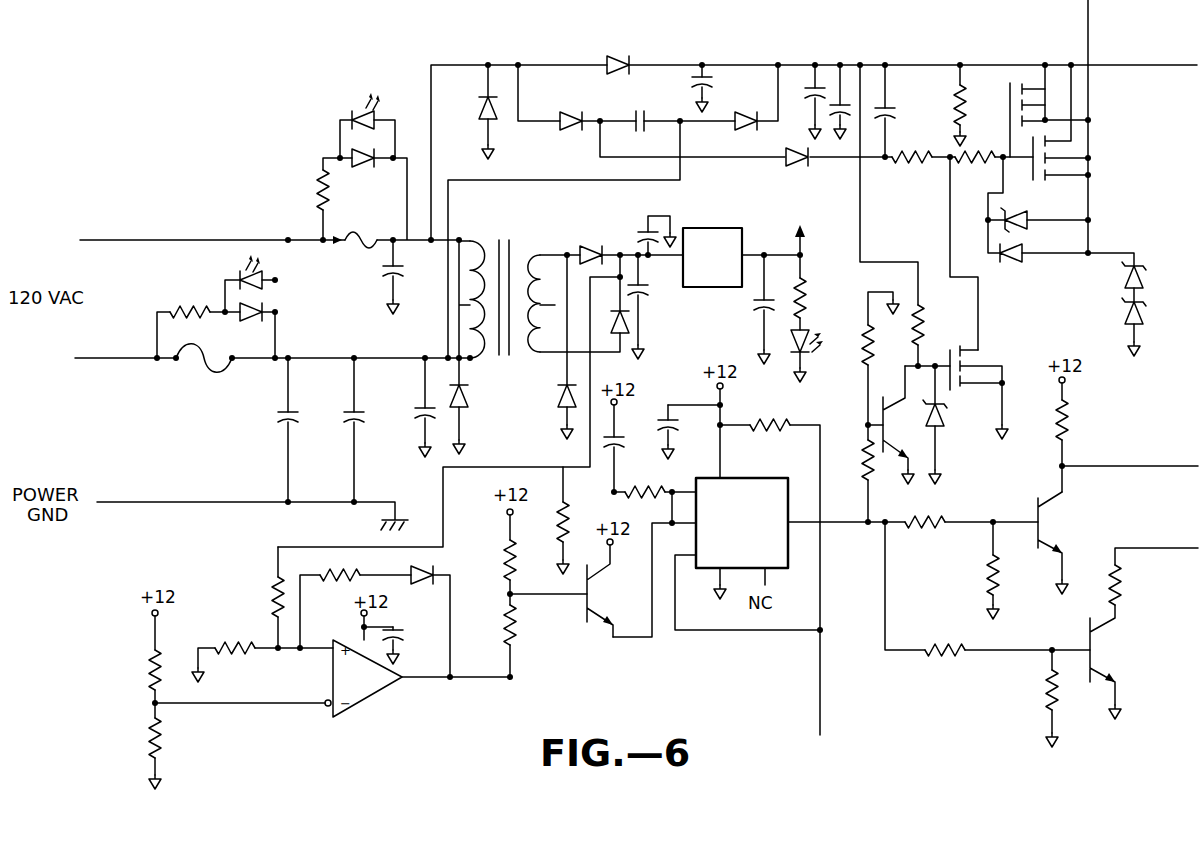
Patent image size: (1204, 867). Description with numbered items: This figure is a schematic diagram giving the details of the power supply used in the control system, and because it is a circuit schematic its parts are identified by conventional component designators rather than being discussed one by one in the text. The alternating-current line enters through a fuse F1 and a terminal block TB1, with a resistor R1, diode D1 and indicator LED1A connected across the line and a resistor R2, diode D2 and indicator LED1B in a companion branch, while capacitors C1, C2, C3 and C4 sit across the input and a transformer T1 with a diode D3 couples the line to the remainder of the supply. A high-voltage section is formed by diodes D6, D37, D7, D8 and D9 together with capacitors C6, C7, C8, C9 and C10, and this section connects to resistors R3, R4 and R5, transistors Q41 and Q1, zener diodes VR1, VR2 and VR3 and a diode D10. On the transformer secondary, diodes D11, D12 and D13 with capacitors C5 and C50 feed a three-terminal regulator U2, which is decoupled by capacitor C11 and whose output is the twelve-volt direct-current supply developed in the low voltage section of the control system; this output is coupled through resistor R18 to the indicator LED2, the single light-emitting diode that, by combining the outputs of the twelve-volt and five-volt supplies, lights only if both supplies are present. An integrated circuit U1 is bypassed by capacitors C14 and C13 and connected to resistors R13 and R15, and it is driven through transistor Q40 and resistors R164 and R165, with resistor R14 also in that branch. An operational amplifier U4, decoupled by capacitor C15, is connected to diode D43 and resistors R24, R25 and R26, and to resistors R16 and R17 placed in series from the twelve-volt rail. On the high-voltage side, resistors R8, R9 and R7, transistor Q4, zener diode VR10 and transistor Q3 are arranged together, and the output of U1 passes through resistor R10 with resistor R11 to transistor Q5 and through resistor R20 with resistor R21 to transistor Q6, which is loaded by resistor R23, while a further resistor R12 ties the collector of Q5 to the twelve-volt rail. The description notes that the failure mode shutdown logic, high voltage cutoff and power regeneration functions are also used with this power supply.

The resistor R1 10K 2W R1 is at (190, 311).
The diode D1 is at (253, 324).
The light emitting diode LED 1A LED1A is at (228, 267).
The fuse F1 15A F1 is at (204, 382).
The capacitor C1 is at (265, 430).
The capacitor C2 is at (332, 430).
The capacitor C4 is at (404, 407).
The resistor R2 10K 2W R2 is at (300, 184).
The diode D2 is at (364, 173).
The light emitting diode LED 1B LED1B is at (341, 102).
The terminal block TB1 is at (359, 229).
The capacitor C3 is at (372, 277).
The transformer T1 is at (505, 289).
The diode D3 is at (474, 406).
The diode D6 is at (471, 112).
The diode D37 is at (614, 52).
The diode D7 is at (569, 109).
The capacitor C6 4.7uF 250V C6 is at (642, 103).
The diode D8 is at (739, 133).
The diode D9 is at (792, 169).
The capacitor C7 680 200V C7 is at (722, 89).
The capacitor C8 is at (803, 102).
The capacitor C9 is at (842, 102).
The capacitor C10 4.7 C10 is at (902, 103).
The resistor R3 16K 2W R3 is at (977, 105).
The resistor R4 33K 2W R4 is at (910, 160).
The resistor R5 330 1/2W R5 is at (974, 171).
The transistor Q41 is at (1040, 120).
The transistor Q1 is at (1060, 122).
The zener diode VR1 is at (1026, 213).
The diode D10 is at (1019, 267).
The zener diode VR2 is at (1108, 279).
The zener diode VR3 is at (1108, 327).
The diode D11 is at (584, 245).
The diode D12 is at (612, 305).
The diode D13 is at (549, 347).
The capacitor C5 is at (648, 307).
The capacitor C50 0.1 C50 is at (640, 227).
The voltage regulator U2 is at (712, 257).
The capacitor C11 10uF 15V C11 is at (746, 309).
The resistor R18 1K R18 is at (819, 292).
The LED LED2 is at (821, 356).
The capacitor C14 0.1 C14 is at (628, 439).
The capacitor C13 0.1 C13 is at (687, 432).
The resistor R13 10K R13 is at (770, 424).
The resistor R15 1K R15 is at (645, 494).
The integrated circuit U1 is at (741, 529).
The transistor Q40 is at (612, 591).
The resistor R164 10K R164 is at (485, 560).
The resistor R165 10K R165 is at (534, 641).
The resistor R14 10M R14 is at (544, 520).
The operational amplifier U4 is at (367, 678).
The capacitor C15 0.1 C15 is at (411, 644).
The diode D43 is at (422, 588).
The resistor R24 12.1K 1% R24 is at (343, 576).
The resistor R25 10K 1% R25 is at (256, 597).
The resistor R26 10K 1% R26 is at (232, 652).
The resistor R16 12.1K 1% R16 is at (128, 667).
The resistor R17 20K 1% R17 is at (176, 751).
The resistor R8 1K R8 is at (881, 332).
The resistor R9 10K R9 is at (851, 460).
The resistor R7 47K 1W R7 is at (937, 316).
The transistor Q4 is at (899, 425).
The zener diode VR10 is at (959, 425).
The transistor Q3 is at (979, 386).
The resistor R10 10K R10 is at (926, 523).
The resistor R11 1K R11 is at (975, 570).
The transistor Q5 is at (1059, 543).
The resistor R20 10K R20 is at (945, 651).
The resistor R21 1K R21 is at (1031, 698).
The transistor Q6 is at (1113, 662).
The resistor R23 1K R23 is at (1133, 585).
The unlabeled pull-up resistor R12 is at (1062, 420).